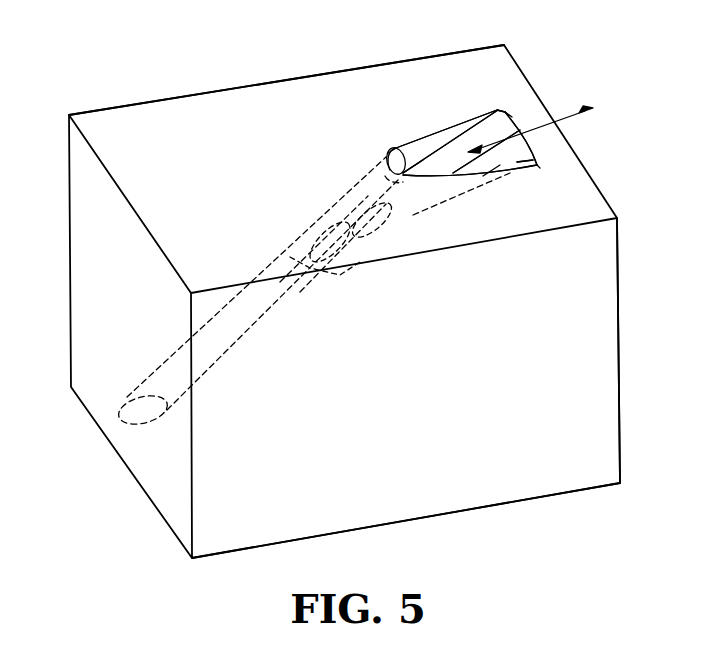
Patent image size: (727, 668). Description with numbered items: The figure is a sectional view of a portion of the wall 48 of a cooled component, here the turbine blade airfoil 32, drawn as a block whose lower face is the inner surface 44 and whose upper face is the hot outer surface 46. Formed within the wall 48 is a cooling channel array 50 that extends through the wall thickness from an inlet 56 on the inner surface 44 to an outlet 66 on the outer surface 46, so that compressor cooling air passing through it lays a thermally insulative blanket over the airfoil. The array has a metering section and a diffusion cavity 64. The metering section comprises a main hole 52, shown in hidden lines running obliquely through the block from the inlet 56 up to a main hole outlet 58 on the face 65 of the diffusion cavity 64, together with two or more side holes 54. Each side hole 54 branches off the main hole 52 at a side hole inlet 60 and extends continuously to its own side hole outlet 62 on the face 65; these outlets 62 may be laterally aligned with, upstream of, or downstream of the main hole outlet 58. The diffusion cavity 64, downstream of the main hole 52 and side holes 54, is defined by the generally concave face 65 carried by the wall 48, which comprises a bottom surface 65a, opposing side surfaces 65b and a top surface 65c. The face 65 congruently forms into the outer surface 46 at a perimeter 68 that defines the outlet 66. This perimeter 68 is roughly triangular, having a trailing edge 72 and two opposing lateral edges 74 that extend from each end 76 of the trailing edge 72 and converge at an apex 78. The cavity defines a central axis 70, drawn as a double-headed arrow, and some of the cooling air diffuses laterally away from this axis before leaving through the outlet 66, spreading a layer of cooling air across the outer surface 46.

The turbine blade airfoil 32 is at (603, 260).
The inner surface 44 is at (515, 503).
The outer surface 46 is at (172, 113).
The wall 48 is at (582, 423).
The cooling channel array 50 is at (517, 135).
The main hole 52 is at (223, 370).
The side hole 54 is at (318, 210).
The inlet 56 is at (120, 413).
The main hole outlet 58 is at (372, 205).
The side hole inlet 60 is at (290, 257).
The side hole outlet 62 is at (360, 177).
The diffusion cavity 64 is at (435, 143).
The face 65 is at (520, 132).
The bottom surface 65a is at (518, 162).
The side surface 65b is at (463, 125).
The top surface 65c is at (395, 143).
The outlet 66 is at (497, 108).
The perimeter 68 is at (515, 173).
The central axis 70 is at (548, 124).
The trailing edge 72 is at (535, 155).
The lateral edge 74 is at (421, 134).
The end 76 is at (512, 117).
The apex 78 is at (390, 153).